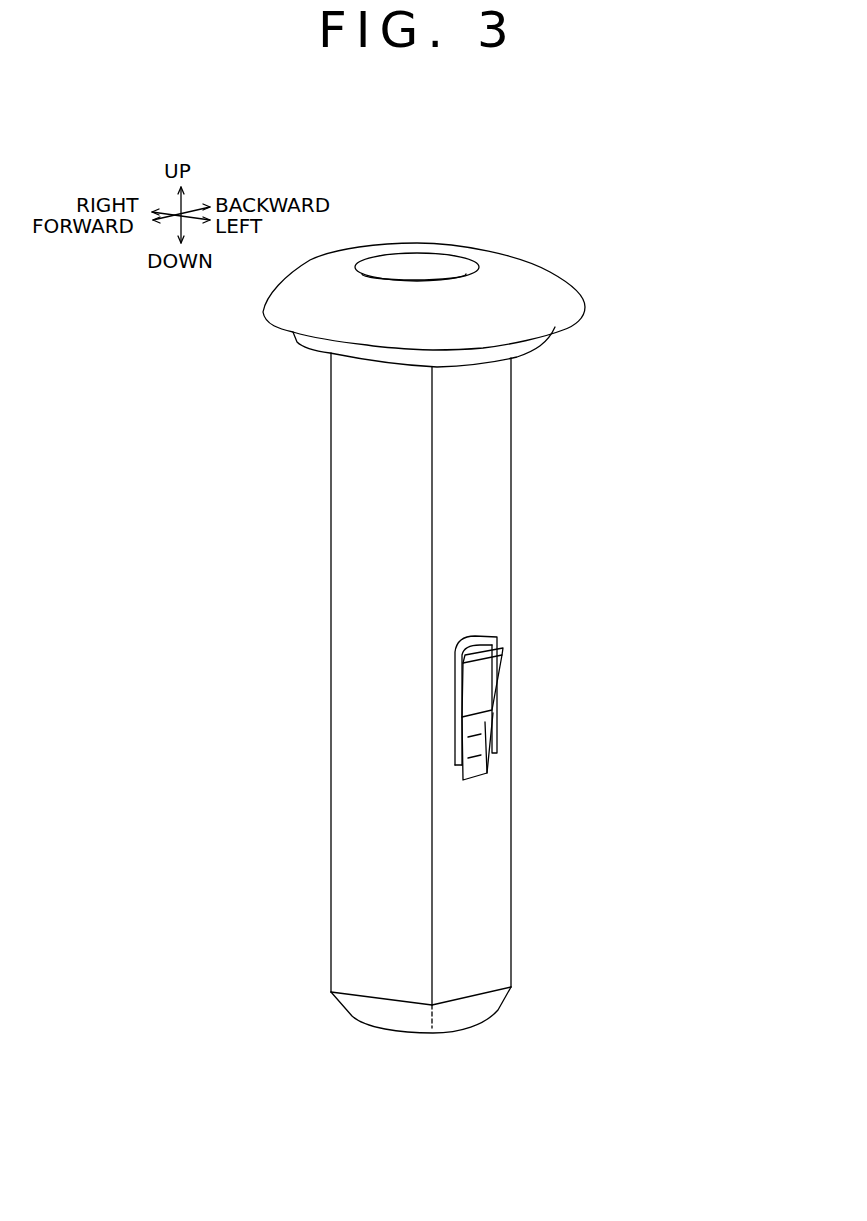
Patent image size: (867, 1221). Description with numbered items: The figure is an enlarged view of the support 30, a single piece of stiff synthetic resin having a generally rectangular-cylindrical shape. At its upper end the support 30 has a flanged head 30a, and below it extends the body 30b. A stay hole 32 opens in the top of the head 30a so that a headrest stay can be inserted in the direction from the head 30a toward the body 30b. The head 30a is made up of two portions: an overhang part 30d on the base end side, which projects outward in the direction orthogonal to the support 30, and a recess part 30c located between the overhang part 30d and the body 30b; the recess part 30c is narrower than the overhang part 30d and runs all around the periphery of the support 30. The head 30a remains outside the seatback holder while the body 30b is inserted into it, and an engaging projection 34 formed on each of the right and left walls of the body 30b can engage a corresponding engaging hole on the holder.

The support 30 is at (565, 230).
The flanged head 30a is at (688, 298).
The body 30b is at (477, 483).
The recess part 30c is at (545, 337).
The overhang part 30d is at (562, 300).
The stay hole 32 is at (414, 280).
The engaging projection 34 is at (487, 680).